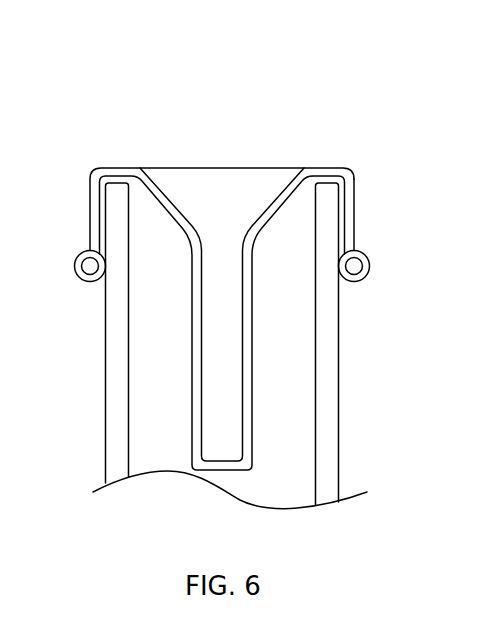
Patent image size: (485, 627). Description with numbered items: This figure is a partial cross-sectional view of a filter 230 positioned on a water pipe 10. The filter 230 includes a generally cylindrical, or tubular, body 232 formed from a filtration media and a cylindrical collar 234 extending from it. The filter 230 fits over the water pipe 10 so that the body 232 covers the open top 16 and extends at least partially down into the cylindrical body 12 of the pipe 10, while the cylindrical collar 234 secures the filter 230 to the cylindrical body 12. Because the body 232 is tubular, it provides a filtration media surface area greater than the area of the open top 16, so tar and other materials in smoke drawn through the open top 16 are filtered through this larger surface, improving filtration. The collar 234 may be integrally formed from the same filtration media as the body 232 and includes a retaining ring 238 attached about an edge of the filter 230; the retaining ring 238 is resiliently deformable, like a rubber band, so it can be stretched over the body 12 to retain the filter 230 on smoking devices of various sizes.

The filter 230 is at (413, 102).
The open top 16 is at (158, 162).
The cylindrical collar 234 is at (355, 233).
The body 232 is at (192, 420).
The retaining ring 238 is at (369, 267).
The cylindrical body 12 is at (105, 397).
The water pipe 10 is at (340, 420).